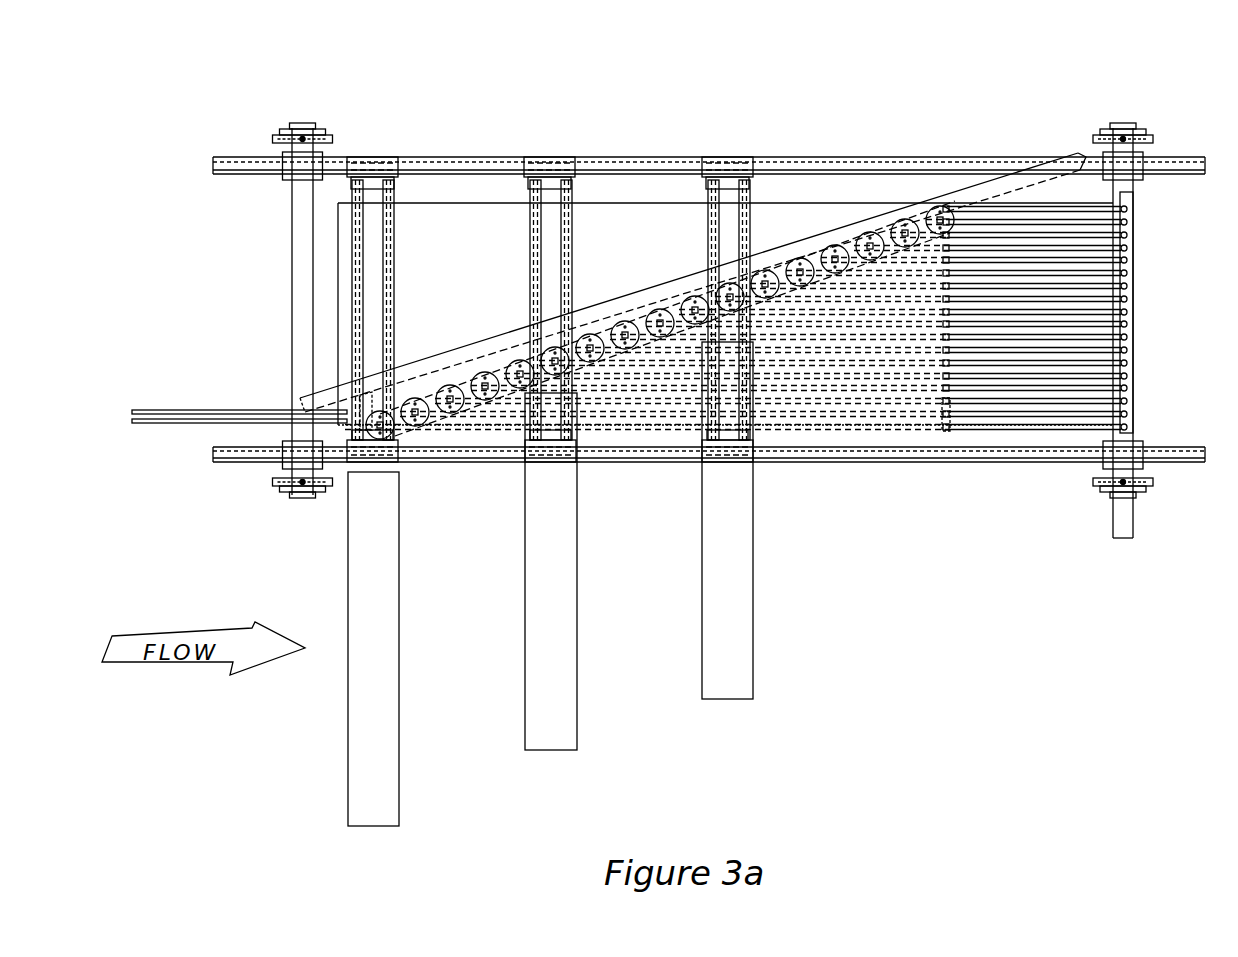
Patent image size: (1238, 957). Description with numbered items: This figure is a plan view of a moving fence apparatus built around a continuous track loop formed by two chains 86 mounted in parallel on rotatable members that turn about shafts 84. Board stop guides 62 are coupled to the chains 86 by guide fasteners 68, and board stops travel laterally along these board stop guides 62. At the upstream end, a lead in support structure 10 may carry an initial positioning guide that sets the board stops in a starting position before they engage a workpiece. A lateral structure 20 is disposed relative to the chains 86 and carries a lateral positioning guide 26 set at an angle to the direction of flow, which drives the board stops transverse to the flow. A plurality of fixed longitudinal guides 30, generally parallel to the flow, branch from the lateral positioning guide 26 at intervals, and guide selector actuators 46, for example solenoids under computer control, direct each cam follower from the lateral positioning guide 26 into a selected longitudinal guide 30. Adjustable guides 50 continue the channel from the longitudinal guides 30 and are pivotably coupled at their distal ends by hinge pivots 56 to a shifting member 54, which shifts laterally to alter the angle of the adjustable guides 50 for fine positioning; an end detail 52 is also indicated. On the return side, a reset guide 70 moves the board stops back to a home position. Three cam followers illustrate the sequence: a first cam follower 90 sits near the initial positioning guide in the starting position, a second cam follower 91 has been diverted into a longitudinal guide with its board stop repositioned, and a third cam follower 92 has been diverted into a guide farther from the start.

The lead in support structure 10 is at (170, 424).
The lateral structure 20 is at (415, 243).
The lateral positioning guide 26 is at (430, 396).
The fixed longitudinal guides 30 is at (860, 405).
The guide selector actuator 46 is at (937, 217).
The adjustable guides 50 is at (1010, 393).
The rod end brackets 52 is at (950, 410).
The shifting member 54 is at (1125, 253).
The hinge pivot 56 is at (1147, 457).
The board stop guides 62 is at (560, 187).
The guide fasteners 68 is at (367, 175).
The reset guide 70 is at (352, 361).
The shafts 84 is at (297, 301).
The chains 86 is at (650, 165).
The first cam follower 90 is at (372, 418).
The second cam follower 91 is at (572, 418).
The third cam follower 92 is at (730, 343).